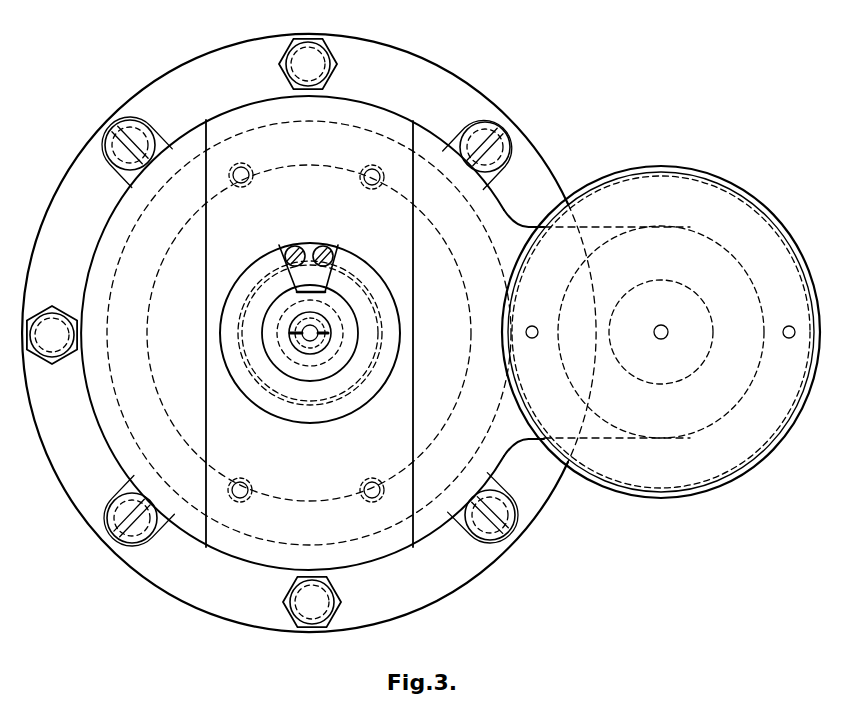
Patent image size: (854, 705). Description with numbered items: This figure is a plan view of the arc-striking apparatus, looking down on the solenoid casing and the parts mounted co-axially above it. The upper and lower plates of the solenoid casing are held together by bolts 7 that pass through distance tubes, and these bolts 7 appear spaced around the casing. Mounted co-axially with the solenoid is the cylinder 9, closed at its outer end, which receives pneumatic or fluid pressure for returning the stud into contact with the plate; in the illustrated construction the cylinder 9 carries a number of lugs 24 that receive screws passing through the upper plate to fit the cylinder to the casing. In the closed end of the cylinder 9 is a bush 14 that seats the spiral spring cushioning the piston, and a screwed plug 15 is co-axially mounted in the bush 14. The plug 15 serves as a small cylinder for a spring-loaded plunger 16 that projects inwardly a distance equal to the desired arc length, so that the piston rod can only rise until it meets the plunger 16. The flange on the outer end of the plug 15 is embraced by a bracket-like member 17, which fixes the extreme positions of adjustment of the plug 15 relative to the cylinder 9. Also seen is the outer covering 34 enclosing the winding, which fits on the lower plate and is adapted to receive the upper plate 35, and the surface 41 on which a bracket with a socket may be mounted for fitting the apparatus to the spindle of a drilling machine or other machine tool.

The bolts 7 is at (308, 55).
The cylinder 9 is at (425, 142).
The bush 14 is at (345, 405).
The screwed plug 15 is at (335, 358).
The plunger 16 is at (328, 333).
The bracket-like member 17 is at (305, 248).
The lugs 24 is at (117, 128).
The outer covering 34 is at (773, 216).
The upper plate 35 is at (700, 212).
The surface 41 is at (360, 110).